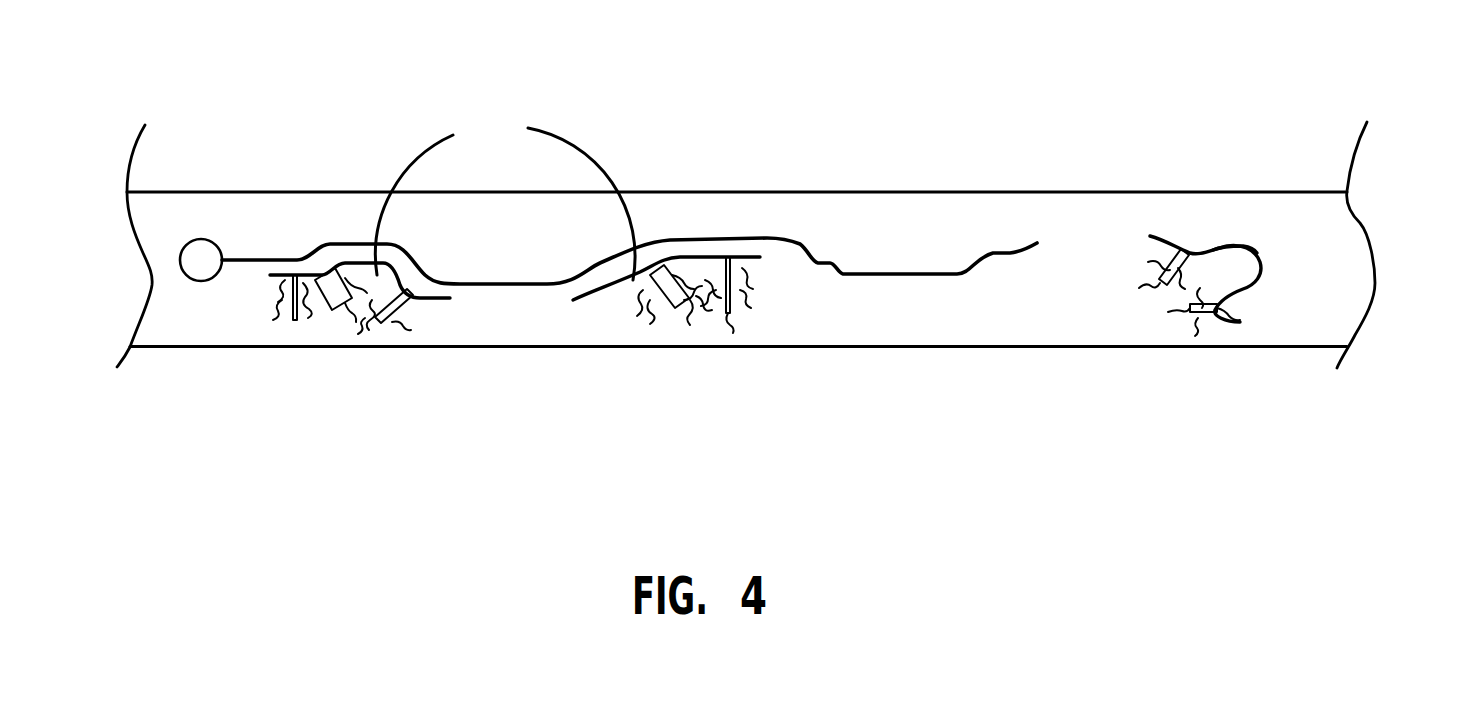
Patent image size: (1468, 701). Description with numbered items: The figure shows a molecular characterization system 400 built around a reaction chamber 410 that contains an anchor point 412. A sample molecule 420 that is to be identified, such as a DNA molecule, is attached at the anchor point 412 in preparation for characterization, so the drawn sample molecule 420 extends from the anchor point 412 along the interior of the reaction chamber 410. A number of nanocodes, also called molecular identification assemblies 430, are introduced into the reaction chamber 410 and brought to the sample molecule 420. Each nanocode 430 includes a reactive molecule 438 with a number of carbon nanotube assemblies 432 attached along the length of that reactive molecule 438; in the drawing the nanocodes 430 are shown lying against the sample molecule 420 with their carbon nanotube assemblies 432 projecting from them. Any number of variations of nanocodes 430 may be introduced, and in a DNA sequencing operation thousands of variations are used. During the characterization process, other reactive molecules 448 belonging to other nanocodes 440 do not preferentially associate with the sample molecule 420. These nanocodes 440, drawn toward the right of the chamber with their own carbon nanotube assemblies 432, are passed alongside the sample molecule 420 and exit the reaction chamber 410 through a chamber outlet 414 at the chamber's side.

The molecular characterization system 400 is at (664, 90).
The reaction chamber 410 is at (1095, 192).
The anchor point 412 is at (200, 265).
The chamber outlet 414 is at (1362, 225).
The sample molecule 420 is at (262, 260).
The nanocode 430 is at (430, 304).
The carbon nanotube assembly 432 is at (295, 326).
The reactive molecule 438 is at (505, 199).
The other nanocode 440 is at (1236, 296).
The other reactive molecule 448 is at (1240, 248).